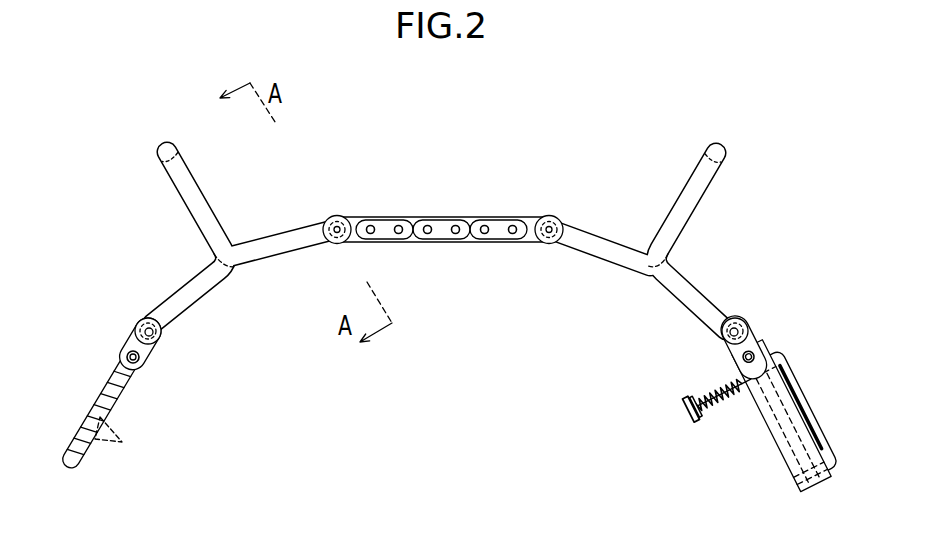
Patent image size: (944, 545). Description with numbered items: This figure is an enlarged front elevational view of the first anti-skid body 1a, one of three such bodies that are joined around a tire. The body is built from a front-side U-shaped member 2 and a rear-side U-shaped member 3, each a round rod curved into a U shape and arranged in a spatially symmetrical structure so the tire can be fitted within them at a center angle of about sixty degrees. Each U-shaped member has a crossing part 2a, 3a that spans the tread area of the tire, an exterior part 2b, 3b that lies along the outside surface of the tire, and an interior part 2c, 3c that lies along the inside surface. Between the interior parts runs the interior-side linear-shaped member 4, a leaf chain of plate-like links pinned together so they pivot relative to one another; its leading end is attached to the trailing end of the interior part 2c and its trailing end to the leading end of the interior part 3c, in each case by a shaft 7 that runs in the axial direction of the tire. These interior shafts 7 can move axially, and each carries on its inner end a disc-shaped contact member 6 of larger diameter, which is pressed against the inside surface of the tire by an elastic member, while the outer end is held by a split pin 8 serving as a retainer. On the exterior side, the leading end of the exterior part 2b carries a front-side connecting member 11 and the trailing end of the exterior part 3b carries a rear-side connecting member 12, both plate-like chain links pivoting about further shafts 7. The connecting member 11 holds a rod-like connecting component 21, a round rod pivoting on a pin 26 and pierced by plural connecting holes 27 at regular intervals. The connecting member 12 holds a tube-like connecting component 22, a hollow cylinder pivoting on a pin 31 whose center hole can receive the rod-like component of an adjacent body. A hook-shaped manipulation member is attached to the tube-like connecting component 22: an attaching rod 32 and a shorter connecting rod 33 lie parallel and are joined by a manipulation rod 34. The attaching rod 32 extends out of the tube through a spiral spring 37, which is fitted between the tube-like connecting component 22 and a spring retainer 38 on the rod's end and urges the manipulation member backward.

The first anti-skid body 1a is at (443, 166).
The front-side U-shaped member 2 is at (195, 125).
The crossing part 2a is at (180, 150).
The exterior part 2b is at (207, 273).
The interior part 2c is at (250, 270).
The rear-side U-shaped member 3 is at (697, 125).
The crossing part 3a is at (705, 150).
The exterior part 3b is at (673, 273).
The interior part 3c is at (632, 268).
The interior-side linear-shaped member 4 is at (468, 217).
The contact member 6 is at (322, 218).
The shaft 7 is at (338, 214).
The split pin 8 is at (150, 347).
The front-side connecting member 11 is at (135, 348).
The rear-side connecting member 12 is at (729, 391).
The rod-like connecting component 21 is at (120, 390).
The tube-like connecting component 22 is at (767, 427).
The pin 26 is at (125, 357).
The connecting holes 27 is at (122, 446).
The pin 31 is at (757, 348).
The attaching rod 32 is at (683, 412).
The connecting rod 33 is at (793, 472).
The manipulation rod 34 is at (793, 375).
The spiral spring 37 is at (717, 407).
The spring retainer 38 is at (692, 420).